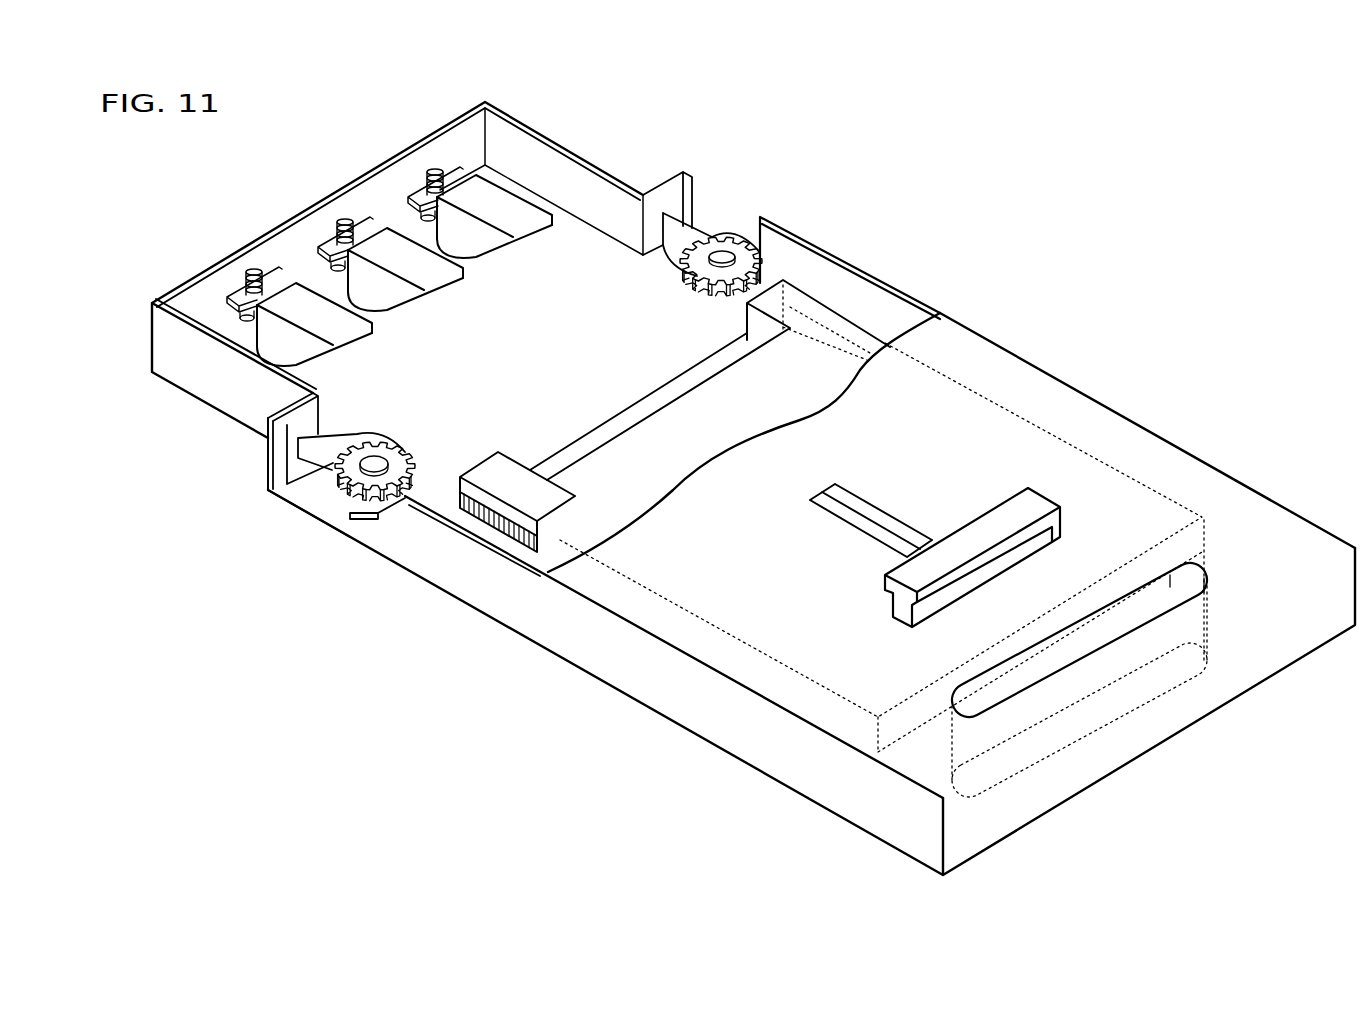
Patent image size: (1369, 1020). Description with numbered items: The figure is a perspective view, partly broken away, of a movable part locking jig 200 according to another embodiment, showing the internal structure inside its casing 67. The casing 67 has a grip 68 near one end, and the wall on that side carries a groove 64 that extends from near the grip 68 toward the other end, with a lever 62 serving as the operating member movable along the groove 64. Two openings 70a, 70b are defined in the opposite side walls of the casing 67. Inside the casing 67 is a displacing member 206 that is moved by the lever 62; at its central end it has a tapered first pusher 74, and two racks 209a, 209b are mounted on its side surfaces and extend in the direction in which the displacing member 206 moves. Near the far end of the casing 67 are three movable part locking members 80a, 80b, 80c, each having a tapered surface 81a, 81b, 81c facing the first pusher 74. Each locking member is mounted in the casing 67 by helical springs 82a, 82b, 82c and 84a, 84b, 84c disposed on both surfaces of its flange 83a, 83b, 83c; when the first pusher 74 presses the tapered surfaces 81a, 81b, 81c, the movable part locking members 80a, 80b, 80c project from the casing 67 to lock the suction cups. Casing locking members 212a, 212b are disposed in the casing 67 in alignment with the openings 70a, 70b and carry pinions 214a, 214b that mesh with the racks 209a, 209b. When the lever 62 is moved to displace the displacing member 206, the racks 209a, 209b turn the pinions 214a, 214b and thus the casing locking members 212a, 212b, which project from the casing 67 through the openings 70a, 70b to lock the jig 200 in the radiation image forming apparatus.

The movable part locking jig 200 is at (993, 217).
The lever 62 is at (1038, 505).
The groove 64 is at (865, 517).
The casing 67 is at (1084, 410).
The grip 68 is at (1082, 650).
The opening 70a is at (313, 493).
The opening 70b is at (728, 222).
The first pusher 74 is at (635, 413).
The movable part locking member 80a is at (336, 332).
The movable part locking member 80b is at (437, 275).
The movable part locking member 80c is at (518, 227).
The tapered surface 81a is at (320, 362).
The tapered surface 81b is at (410, 308).
The tapered surface 81c is at (498, 253).
The helical spring 82a is at (252, 270).
The helical spring 82b is at (343, 219).
The helical spring 82c is at (433, 169).
The flange 83a is at (229, 298).
The flange 83b is at (318, 245).
The flange 83c is at (409, 195).
The helical spring 84a is at (238, 316).
The helical spring 84b is at (334, 266).
The helical spring 84c is at (425, 216).
The displacing member 206 is at (603, 480).
The rack 209a is at (513, 528).
The rack 209b is at (838, 316).
The casing locking member 212a is at (347, 447).
The casing locking member 212b is at (675, 263).
The pinion 214a is at (413, 445).
The pinion 214b is at (712, 295).